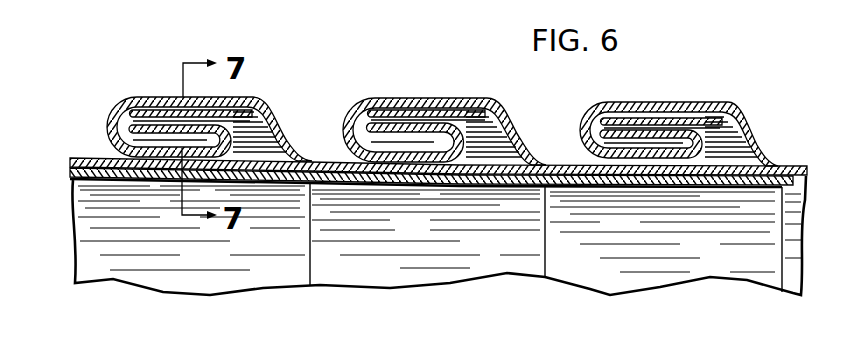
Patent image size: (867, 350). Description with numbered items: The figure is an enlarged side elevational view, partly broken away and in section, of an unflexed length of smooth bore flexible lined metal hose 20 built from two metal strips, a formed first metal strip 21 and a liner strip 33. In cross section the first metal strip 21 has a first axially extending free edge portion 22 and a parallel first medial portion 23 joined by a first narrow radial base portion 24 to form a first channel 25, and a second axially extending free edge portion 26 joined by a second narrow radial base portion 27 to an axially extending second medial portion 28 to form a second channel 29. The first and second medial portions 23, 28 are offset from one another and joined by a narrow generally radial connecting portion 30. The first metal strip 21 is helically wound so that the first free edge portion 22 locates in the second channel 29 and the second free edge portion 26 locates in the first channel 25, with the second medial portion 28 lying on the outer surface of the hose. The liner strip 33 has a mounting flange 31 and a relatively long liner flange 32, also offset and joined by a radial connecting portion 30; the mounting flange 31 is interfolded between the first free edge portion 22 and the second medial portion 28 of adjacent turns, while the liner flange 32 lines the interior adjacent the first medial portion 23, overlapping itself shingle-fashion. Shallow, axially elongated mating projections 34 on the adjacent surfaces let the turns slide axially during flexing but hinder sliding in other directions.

The flexible lined metal hose 20 is at (117, 84).
The first metal strip 21 is at (266, 95).
The first axially extending free edge portion 22 is at (165, 130).
The first medial portion 23 is at (182, 136).
The first narrow radial base portion 24 is at (234, 153).
The first channel 25 is at (229, 152).
The second axially extending free edge portion 26 is at (138, 176).
The second narrow radial base portion 27 is at (117, 128).
The second medial portion 28 is at (155, 97).
The second channel 29 is at (112, 106).
The radial connecting portion 30 is at (291, 118).
The mounting flange 31 is at (472, 116).
The liner flange 32 is at (685, 180).
The liner strip 33 is at (297, 193).
The mating projections 34 is at (639, 104).